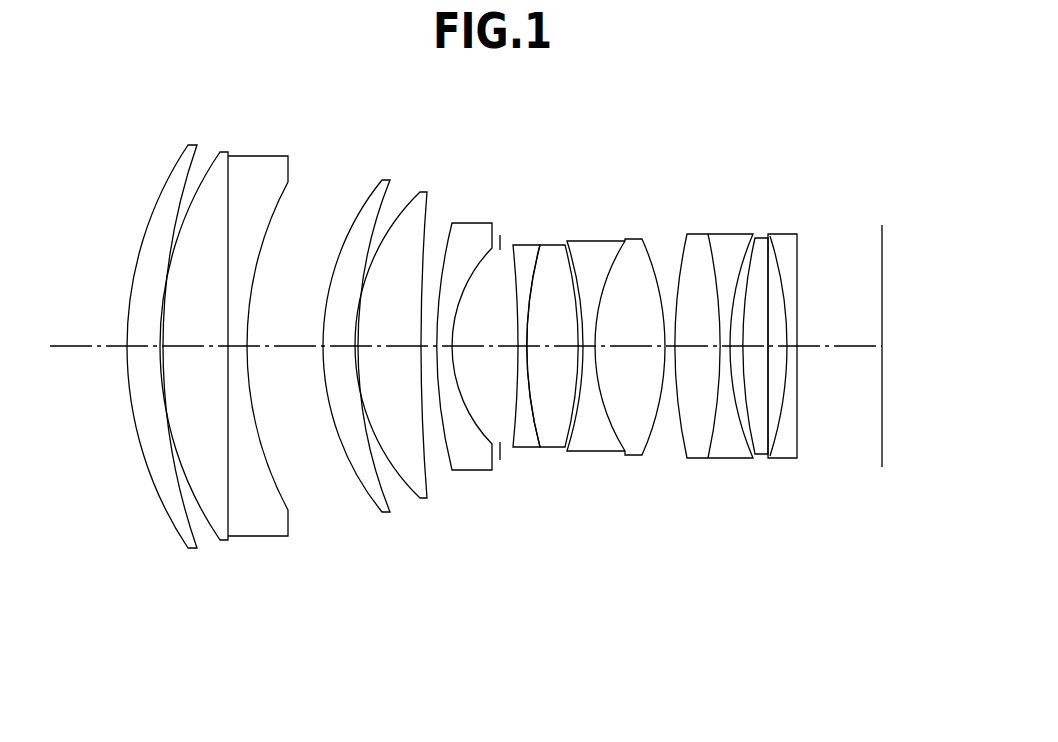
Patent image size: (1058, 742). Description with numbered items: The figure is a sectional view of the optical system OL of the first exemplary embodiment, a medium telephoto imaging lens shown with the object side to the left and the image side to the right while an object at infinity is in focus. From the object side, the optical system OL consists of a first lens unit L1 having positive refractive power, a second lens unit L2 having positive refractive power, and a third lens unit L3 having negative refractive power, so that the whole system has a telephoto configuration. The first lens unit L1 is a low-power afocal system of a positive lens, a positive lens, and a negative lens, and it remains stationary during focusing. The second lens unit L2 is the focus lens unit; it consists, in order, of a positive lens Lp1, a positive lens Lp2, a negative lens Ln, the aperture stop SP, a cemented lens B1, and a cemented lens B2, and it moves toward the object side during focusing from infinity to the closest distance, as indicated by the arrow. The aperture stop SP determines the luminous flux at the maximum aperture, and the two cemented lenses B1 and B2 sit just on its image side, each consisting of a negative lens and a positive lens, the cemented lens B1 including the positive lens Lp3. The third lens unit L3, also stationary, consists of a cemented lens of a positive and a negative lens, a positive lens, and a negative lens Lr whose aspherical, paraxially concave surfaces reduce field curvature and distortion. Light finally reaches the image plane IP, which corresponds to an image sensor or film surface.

The optical system OL is at (481, 418).
The first lens unit L1 is at (322, 575).
The second lens unit L2 is at (494, 377).
The third lens unit L3 is at (748, 382).
The positive lens Lp1 is at (385, 178).
The positive lens Lp2 is at (425, 191).
The negative lens Ln is at (470, 222).
The aperture stop SP is at (502, 240).
The positive lens Lp3 is at (556, 244).
The cemented lens B1 is at (547, 348).
The cemented lens B2 is at (616, 375).
The negative lens Lr is at (785, 234).
The image plane IP is at (884, 250).